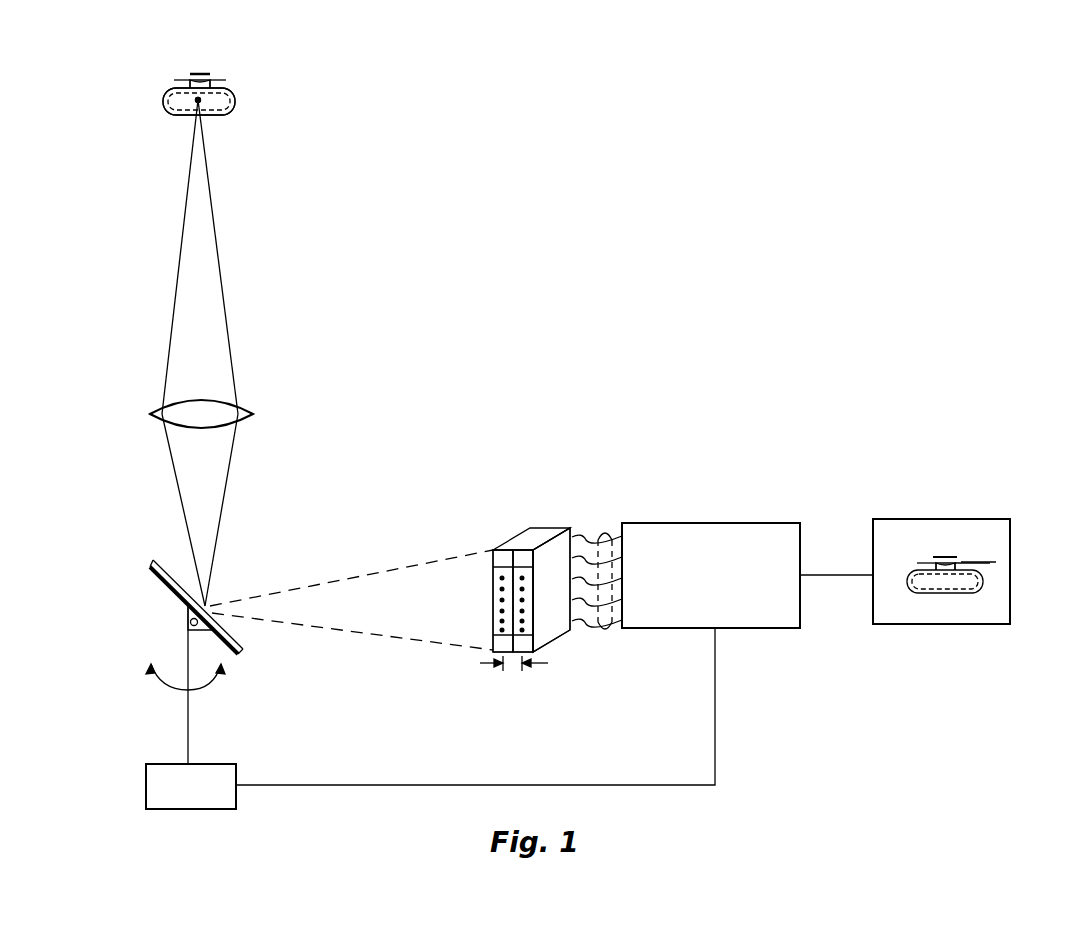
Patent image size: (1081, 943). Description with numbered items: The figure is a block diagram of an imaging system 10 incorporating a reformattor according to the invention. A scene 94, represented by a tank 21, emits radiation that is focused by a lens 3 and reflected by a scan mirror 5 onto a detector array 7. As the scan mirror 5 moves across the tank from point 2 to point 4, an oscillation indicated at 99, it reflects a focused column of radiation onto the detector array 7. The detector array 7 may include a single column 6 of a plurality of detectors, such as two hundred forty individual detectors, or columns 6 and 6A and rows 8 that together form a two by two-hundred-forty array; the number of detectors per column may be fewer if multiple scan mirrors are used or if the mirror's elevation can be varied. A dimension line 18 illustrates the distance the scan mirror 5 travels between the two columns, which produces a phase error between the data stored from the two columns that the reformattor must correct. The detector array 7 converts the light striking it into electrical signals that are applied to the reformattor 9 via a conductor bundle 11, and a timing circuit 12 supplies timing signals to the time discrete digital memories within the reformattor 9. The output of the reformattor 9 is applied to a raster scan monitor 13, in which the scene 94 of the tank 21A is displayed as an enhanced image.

The point 2 is at (172, 115).
The tank 21 is at (228, 88).
The scene 94 is at (249, 61).
The point 4 is at (223, 115).
The lens 3 is at (253, 413).
The scan mirror 5 is at (249, 654).
The mirror oscillation 99 is at (218, 688).
The imaging system 10 is at (641, 383).
The column 6 is at (522, 542).
The rows 8 is at (493, 557).
The column 6A is at (553, 533).
The detector array 7 is at (560, 636).
The dimension line 18 is at (538, 667).
The conductor bundle 11 is at (597, 533).
The reformattor 9 is at (722, 523).
The timing circuit 12 is at (162, 768).
The raster scan monitor 13 is at (945, 519).
The tank 21A is at (958, 557).